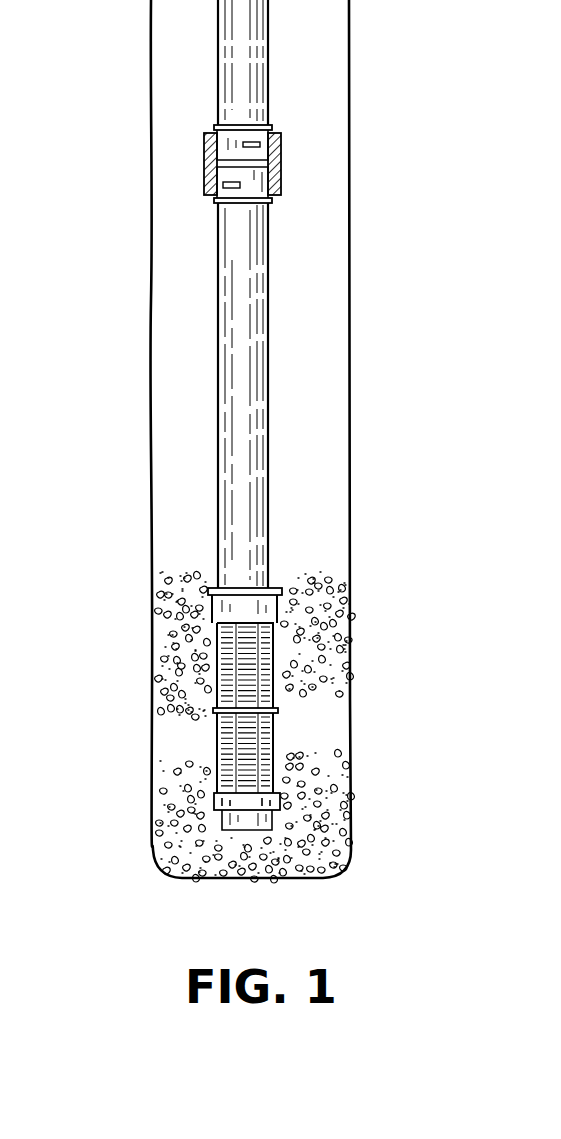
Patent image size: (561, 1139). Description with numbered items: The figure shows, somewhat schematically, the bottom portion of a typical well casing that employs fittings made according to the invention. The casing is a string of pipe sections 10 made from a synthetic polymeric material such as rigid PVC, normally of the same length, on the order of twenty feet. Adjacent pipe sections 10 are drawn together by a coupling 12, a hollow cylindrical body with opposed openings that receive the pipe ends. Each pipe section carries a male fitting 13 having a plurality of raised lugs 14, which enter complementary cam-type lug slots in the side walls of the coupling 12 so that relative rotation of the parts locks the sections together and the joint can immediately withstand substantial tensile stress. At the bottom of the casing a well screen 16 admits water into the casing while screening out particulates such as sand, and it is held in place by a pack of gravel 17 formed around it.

The pipe sections 10 is at (255, 82).
The coupling 12 is at (280, 185).
The male fittings 13 is at (232, 153).
The raised lugs 14 is at (250, 142).
The well screen 16 is at (225, 722).
The pack of gravel 17 is at (195, 823).